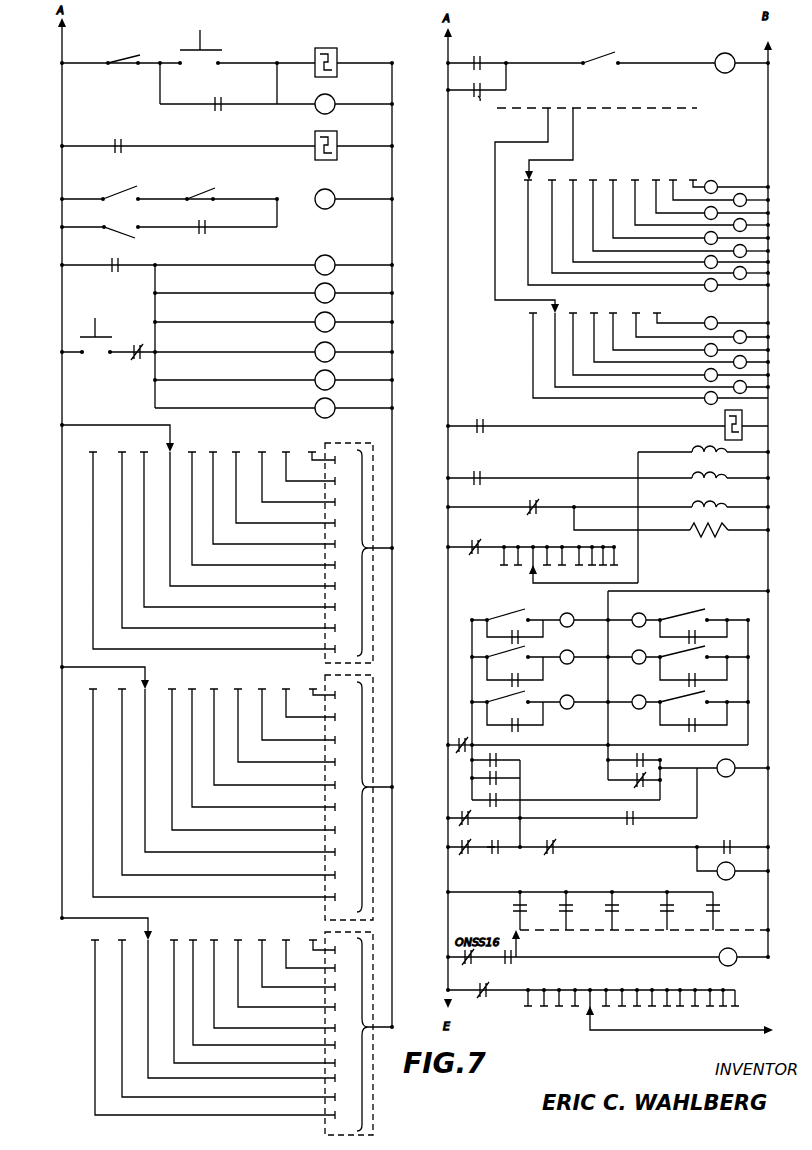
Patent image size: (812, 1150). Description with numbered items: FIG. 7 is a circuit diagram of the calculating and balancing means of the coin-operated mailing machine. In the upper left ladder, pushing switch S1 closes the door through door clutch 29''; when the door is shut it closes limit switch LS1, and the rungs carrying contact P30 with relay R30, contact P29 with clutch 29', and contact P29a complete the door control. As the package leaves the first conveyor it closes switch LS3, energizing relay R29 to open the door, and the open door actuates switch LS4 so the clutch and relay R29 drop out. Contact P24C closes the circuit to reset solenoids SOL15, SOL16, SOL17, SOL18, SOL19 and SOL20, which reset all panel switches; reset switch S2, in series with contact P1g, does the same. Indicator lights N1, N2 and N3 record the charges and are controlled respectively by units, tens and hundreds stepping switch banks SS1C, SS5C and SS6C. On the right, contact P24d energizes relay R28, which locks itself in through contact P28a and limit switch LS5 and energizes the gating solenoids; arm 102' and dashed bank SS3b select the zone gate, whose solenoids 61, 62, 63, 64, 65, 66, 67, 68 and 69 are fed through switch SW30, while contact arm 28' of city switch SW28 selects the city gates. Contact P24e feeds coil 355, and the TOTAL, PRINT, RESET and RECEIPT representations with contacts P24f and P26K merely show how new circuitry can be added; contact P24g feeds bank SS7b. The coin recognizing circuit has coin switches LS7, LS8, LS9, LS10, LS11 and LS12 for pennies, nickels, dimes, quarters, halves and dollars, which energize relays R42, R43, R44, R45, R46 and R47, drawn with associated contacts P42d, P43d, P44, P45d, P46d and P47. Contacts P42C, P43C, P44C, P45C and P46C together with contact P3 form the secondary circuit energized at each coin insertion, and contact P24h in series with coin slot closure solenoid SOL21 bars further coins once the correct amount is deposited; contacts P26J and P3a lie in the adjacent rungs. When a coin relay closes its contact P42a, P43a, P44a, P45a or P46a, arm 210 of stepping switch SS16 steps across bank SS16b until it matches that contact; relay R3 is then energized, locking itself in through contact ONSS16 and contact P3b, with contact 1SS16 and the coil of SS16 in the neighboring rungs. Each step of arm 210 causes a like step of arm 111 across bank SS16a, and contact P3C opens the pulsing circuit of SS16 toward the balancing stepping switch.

The limit switch LS1 is at (128, 57).
The door switch S1 is at (200, 47).
The door clutch 29'' is at (331, 43).
The contact P30 is at (220, 97).
The relay R30 is at (333, 100).
The contact P29 is at (187, 134).
The relay coil 29 prime 29' is at (354, 143).
The limit switch LS3 is at (200, 185).
The relay R29 is at (333, 196).
The limit switch LS4 is at (168, 223).
The contact P29a is at (207, 235).
The contact P24C is at (107, 274).
The reset solenoid SOL15 is at (318, 257).
The reset solenoid SOL16 is at (318, 286).
The reset solenoid SOL17 is at (318, 314).
The reset solenoid SOL18 is at (318, 344).
The reset solenoid SOL19 is at (318, 372).
The reset solenoid SOL20 is at (318, 400).
The reset switch S2 is at (107, 347).
The contact P1g is at (146, 341).
The stepping switch SS1C is at (117, 437).
The indicator light N1 is at (58, 543).
The stepping switch SS5C is at (104, 670).
The indicator light N2 is at (58, 773).
The stepping switch SS6C is at (106, 921).
The indicator light N3 is at (88, 1017).
The contact P24d is at (477, 56).
The limit switch LS5 is at (606, 54).
The relay R28 is at (729, 54).
The contact P28a is at (476, 99).
The stepping switch SS3b is at (618, 108).
The contact arm 102' is at (569, 144).
The contact arm 28' is at (512, 210).
The switch bank SW30 is at (646, 176).
The gate solenoid 61 is at (737, 180).
The gate solenoid 62 is at (743, 198).
The gate solenoid 63 is at (705, 213).
The gate solenoid 64 is at (743, 223).
The gate solenoid 65 is at (705, 238).
The gate solenoid 66 is at (743, 249).
The gate solenoid 67 is at (705, 262).
The gate solenoid 68 is at (743, 271).
The gate solenoid 69 is at (714, 291).
The city selector switch SW28 is at (649, 347).
The contact P24e is at (480, 418).
The relay coil 355 is at (742, 416).
The total circuit representation TOTAL is at (690, 446).
The contact P24f is at (478, 470).
The print circuit representation PRINT is at (692, 472).
The contact P26K is at (539, 505).
The reset circuit representation RESET is at (694, 500).
The receipt circuit representation RECEIPT is at (699, 524).
The contact P24g is at (482, 535).
The stepping switch bank SS7b is at (530, 575).
The coin switch LS7 is at (507, 610).
The contact P42d is at (523, 634).
The relay R42 is at (570, 613).
The coin switch LS8 is at (508, 645).
The contact P43d is at (515, 672).
The relay R43 is at (574, 660).
The coin switch LS9 is at (514, 691).
The contact P44 is at (516, 728).
The relay R44 is at (571, 696).
The relay R45 is at (639, 613).
The coin switch LS10 is at (693, 609).
The contact P45d is at (693, 632).
The relay R46 is at (639, 650).
The coin switch LS11 is at (695, 660).
The contact P46d is at (703, 683).
The relay R47 is at (639, 695).
The coin switch LS12 is at (696, 705).
The contact P47 is at (694, 721).
The contact P3 is at (464, 738).
The contact P42C is at (498, 755).
The contact P43C is at (498, 773).
The contact P44C is at (498, 791).
The contact P45C is at (642, 754).
The contact P46C is at (640, 782).
The coin slot closure solenoid SOL21 is at (728, 778).
The contact P26J is at (470, 824).
The contact P24h is at (626, 825).
The ON SS16 contact ONSS16 is at (466, 854).
The contact P3a is at (496, 853).
The contact 1SS16 is at (556, 852).
The stepping switch SS16 is at (730, 880).
The contact P42a is at (513, 908).
The contact P43a is at (560, 908).
The contact P44a is at (606, 908).
The contact P45a is at (661, 908).
The contact P46a is at (706, 908).
The stepping switch bank SS16b is at (641, 942).
The wiper arm 210 is at (519, 943).
The relay R3 is at (729, 966).
The contact P3b is at (515, 963).
The contact P3C is at (487, 993).
The stepping switch bank SS16a is at (654, 1013).
The wiper arm 111 is at (630, 1030).